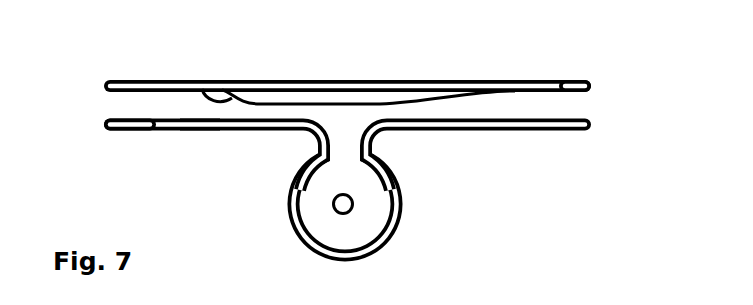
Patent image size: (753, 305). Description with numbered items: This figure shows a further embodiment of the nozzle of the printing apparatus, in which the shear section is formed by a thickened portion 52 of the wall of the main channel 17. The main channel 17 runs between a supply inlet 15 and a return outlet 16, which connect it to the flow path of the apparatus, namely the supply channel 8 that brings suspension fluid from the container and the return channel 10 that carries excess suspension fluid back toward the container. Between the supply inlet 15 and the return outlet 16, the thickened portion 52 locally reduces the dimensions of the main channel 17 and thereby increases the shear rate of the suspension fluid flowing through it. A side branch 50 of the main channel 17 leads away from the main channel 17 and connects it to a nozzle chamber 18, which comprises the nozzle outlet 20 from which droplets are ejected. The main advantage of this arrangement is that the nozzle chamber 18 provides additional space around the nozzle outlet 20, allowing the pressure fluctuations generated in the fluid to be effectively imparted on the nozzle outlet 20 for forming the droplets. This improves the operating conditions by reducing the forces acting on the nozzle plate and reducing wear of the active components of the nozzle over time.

The supply channel 8 is at (112, 108).
The return channel 10 is at (580, 106).
The supply inlet 15 is at (123, 80).
The return outlet 16 is at (578, 80).
The main channel 17 is at (197, 118).
The nozzle chamber 18 is at (310, 182).
The nozzle outlet 20 is at (333, 208).
The side branch 50 is at (372, 143).
The thickened portion 52 is at (207, 97).